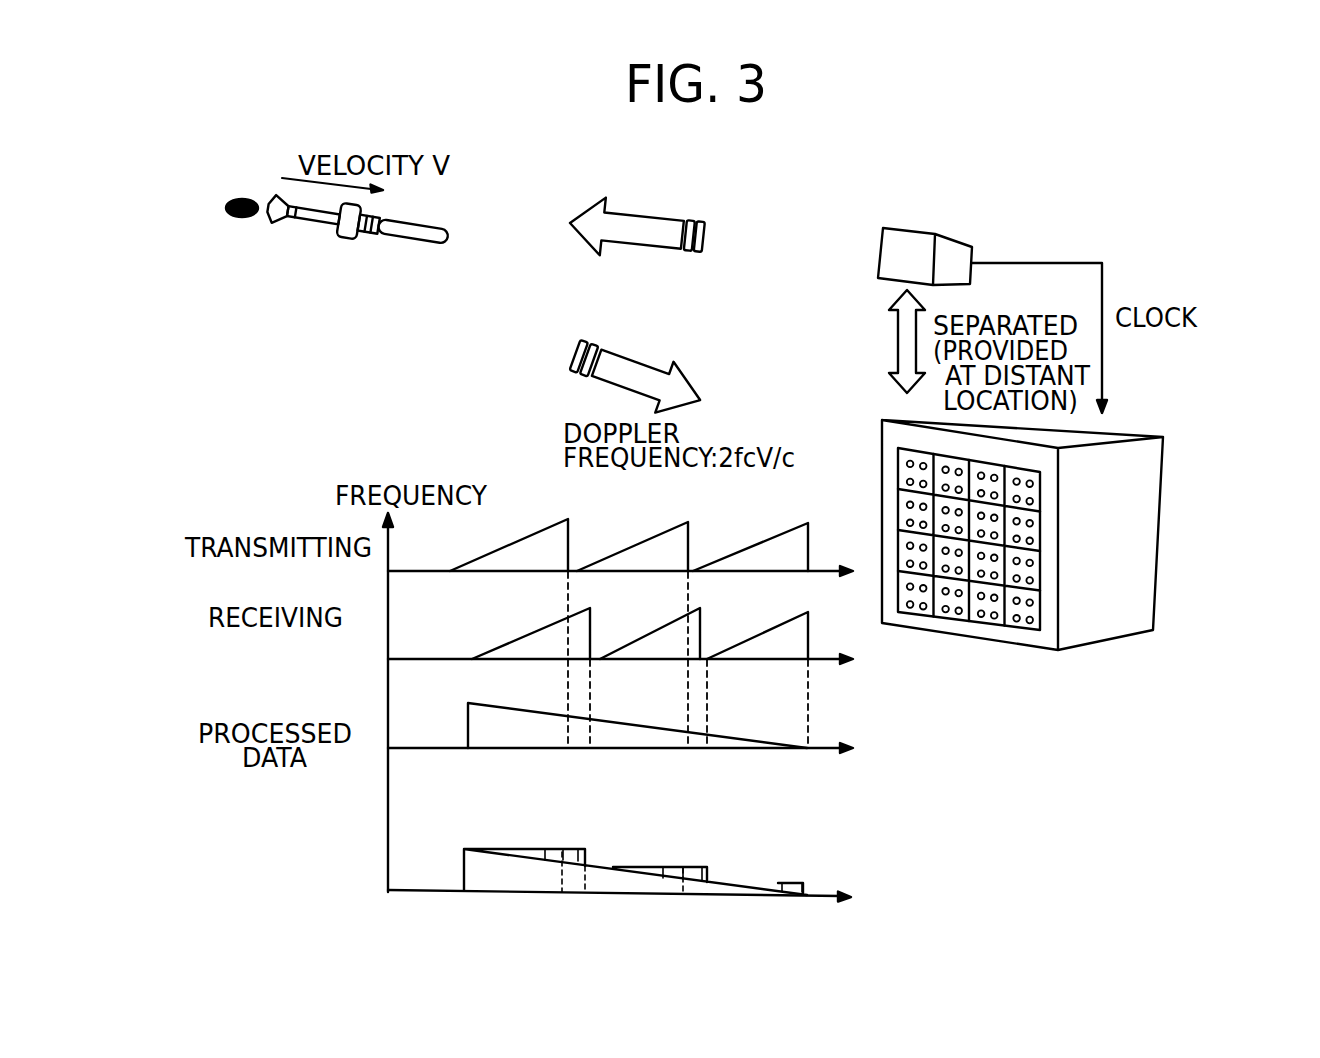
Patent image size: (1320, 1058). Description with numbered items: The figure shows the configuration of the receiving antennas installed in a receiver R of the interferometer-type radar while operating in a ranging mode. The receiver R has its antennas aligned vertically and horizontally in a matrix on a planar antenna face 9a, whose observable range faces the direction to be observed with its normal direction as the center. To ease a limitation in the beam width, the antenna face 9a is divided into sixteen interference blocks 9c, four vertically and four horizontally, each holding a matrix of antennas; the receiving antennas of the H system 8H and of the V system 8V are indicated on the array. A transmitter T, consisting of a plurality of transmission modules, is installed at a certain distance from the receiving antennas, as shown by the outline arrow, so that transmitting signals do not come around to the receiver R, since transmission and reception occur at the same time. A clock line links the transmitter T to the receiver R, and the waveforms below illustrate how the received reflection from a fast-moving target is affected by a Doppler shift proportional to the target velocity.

The transmitter T is at (962, 240).
The receiver R is at (1163, 465).
The antenna face 9a is at (1040, 457).
The interference block 9c is at (908, 485).
The receiving antenna of H system 8H is at (910, 457).
The receiving antenna of V system 8V is at (907, 582).